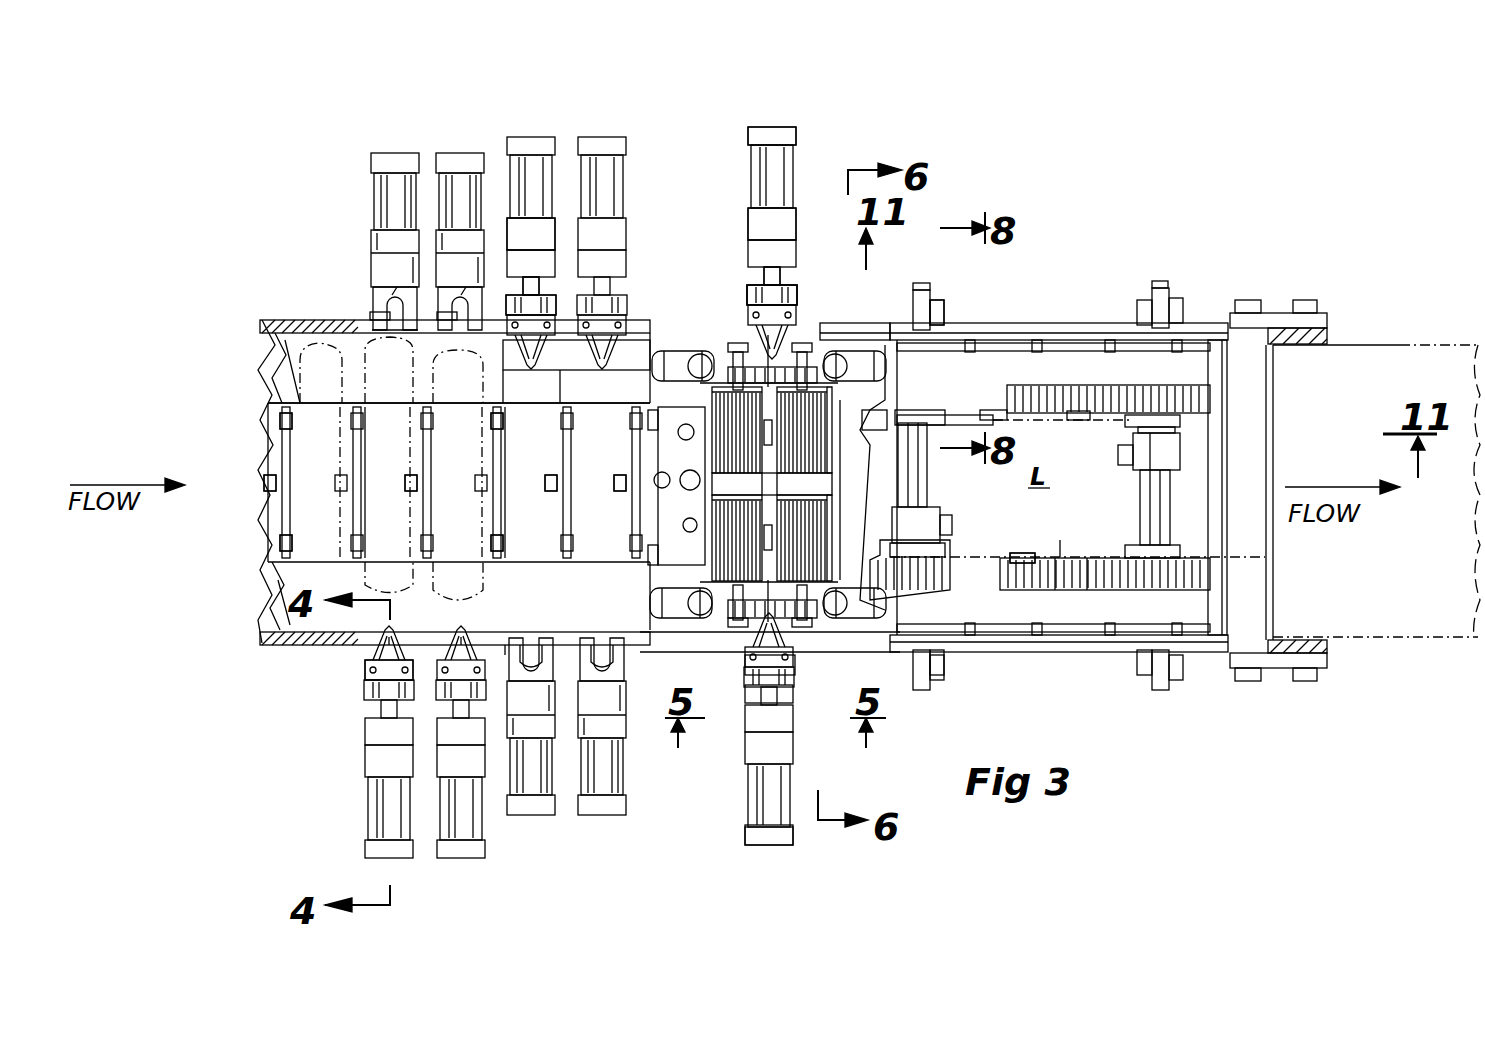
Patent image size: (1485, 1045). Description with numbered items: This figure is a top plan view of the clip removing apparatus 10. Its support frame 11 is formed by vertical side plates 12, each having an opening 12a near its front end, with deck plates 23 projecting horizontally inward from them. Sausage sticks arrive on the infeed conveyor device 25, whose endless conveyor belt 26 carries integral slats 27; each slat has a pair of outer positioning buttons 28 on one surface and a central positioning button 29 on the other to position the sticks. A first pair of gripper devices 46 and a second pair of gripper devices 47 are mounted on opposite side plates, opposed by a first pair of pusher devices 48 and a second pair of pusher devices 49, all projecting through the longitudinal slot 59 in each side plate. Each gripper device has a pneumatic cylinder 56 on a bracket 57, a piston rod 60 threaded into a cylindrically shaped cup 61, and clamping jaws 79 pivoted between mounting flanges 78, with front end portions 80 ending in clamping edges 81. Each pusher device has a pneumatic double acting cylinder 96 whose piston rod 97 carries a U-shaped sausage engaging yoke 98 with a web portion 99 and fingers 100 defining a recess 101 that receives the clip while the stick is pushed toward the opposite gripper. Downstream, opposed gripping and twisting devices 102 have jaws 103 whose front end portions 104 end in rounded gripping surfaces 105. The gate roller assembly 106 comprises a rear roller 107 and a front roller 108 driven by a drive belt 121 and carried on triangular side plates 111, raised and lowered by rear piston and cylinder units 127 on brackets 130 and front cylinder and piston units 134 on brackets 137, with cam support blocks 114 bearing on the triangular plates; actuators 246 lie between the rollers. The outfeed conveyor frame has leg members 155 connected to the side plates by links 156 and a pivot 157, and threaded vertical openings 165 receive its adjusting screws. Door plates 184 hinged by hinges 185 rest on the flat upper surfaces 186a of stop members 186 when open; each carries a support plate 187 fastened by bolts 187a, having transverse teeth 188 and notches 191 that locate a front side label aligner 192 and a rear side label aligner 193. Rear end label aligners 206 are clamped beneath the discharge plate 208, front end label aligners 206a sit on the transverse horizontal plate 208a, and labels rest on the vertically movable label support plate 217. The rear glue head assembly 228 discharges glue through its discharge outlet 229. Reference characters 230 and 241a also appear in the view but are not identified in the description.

The clip removing apparatus 10 is at (1035, 185).
The support frame 11 is at (304, 318).
The vertical side plates 12 is at (290, 318).
The opening 12a is at (1224, 330).
The deck plates 23 is at (272, 376).
The infeed conveyor device 25 is at (272, 440).
The endless conveyor belt 26 is at (272, 415).
The slats or flights 27 is at (282, 515).
The outer positioning buttons 28 is at (295, 540).
The central positioning button 29 is at (264, 482).
The first pair of gripper devices 46 is at (428, 868).
The second pair of gripper devices 47 is at (572, 132).
The first pair of pusher devices 48 is at (432, 145).
The second pair of pusher devices 49 is at (560, 822).
The pneumatic cylinder 56 is at (618, 162).
The bracket 57 is at (612, 248).
The slot 59 is at (386, 645).
The piston rod 60 is at (612, 268).
The cylindrically shaped cup 61 is at (628, 304).
The mounting flanges 78 is at (370, 670).
The clamping jaws 79 is at (620, 370).
The front end portions 80 is at (450, 645).
The clamping edge 81 is at (473, 470).
The pneumatic double acting cylinder 96 is at (392, 190).
The piston rod 97 is at (392, 300).
The U-shaped sausage engaging yoke 98 is at (372, 320).
The web portion 99 is at (505, 655).
The fingers 100 is at (545, 655).
The recess 101 is at (600, 655).
The gripping and twisting devices 102 is at (785, 125).
The jaws 103 is at (810, 282).
The front end portions 104 is at (798, 655).
The rounded gripping surfaces 105 is at (805, 350).
The gate roller assembly 106 is at (850, 432).
The rear roller 107 is at (712, 400).
The front roller 108 is at (792, 460).
The triangular side plates 111 is at (716, 345).
The cam support blocks 114 is at (748, 700).
The drive belt 121 is at (834, 484).
The rear pneumatic piston and cylinder units 127 is at (692, 352).
The bracket 130 is at (605, 325).
The front cylinder and piston units 134 is at (872, 345).
The bracket 137 is at (1000, 416).
The leg members 155 is at (1328, 336).
The links 156 is at (1328, 318).
The pivot 157 is at (1315, 293).
The threaded vertical opening 165 is at (1250, 300).
The door plates 184 is at (1068, 322).
The hinges 185 is at (945, 315).
The stop members 186 is at (930, 306).
The flat upper surface 186a is at (920, 288).
The support plate 187 is at (1082, 385).
The bolts 187a is at (1025, 343).
The transverse teeth 188 is at (1214, 395).
The notches 191 is at (1035, 546).
The front side label aligner 192 is at (955, 528).
The rear side label aligner 193 is at (1062, 548).
The rear end label aligners 206 is at (1185, 420).
The front end label aligners 206a is at (1010, 422).
The discharge plate 208 is at (1275, 447).
The transverse horizontal plate 208a is at (925, 471).
The label support plate 217 is at (1070, 595).
The rear glue head assembly 228 is at (1185, 445).
The discharge outlet 229 is at (1120, 458).
The rod 230 is at (1165, 492).
The block 241a is at (925, 491).
The actuators 246 is at (778, 432).